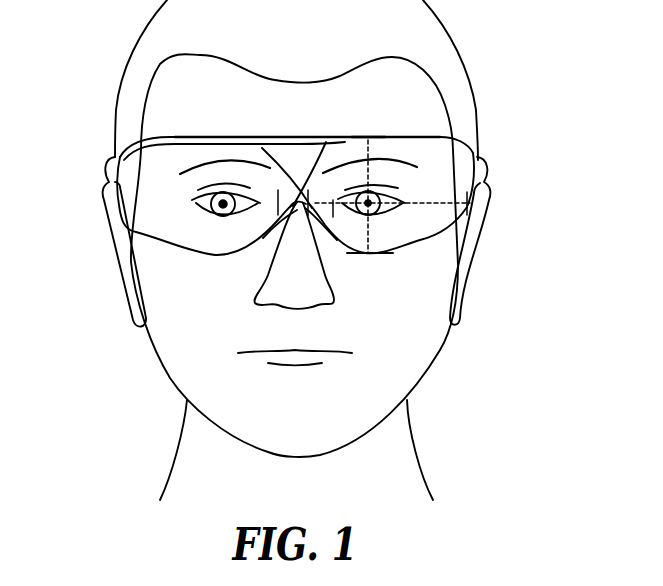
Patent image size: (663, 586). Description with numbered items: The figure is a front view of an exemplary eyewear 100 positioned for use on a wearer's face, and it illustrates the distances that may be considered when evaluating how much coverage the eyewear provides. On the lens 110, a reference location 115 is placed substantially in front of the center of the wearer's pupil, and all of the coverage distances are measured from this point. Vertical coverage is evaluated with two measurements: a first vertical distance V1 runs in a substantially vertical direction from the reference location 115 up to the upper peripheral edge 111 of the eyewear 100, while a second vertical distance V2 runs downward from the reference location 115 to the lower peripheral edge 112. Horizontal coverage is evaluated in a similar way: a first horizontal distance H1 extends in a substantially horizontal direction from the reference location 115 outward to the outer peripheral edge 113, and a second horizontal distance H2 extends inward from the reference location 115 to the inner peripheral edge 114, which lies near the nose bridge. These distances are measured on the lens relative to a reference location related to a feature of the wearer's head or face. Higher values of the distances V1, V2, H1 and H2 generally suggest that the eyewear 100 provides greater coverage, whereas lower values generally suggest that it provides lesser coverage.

The eyewear 100 is at (166, 130).
The lens 110 is at (376, 160).
The upper peripheral edge 111 is at (323, 137).
The lower peripheral edge 112 is at (380, 255).
The outer peripheral edge 113 is at (467, 197).
The inner peripheral edge 114 is at (305, 200).
The reference location 115 is at (376, 208).
The first vertical distance V1 is at (433, 157).
The second vertical distance V2 is at (382, 213).
The first horizontal distance H1 is at (430, 203).
The second horizontal distance H2 is at (335, 218).